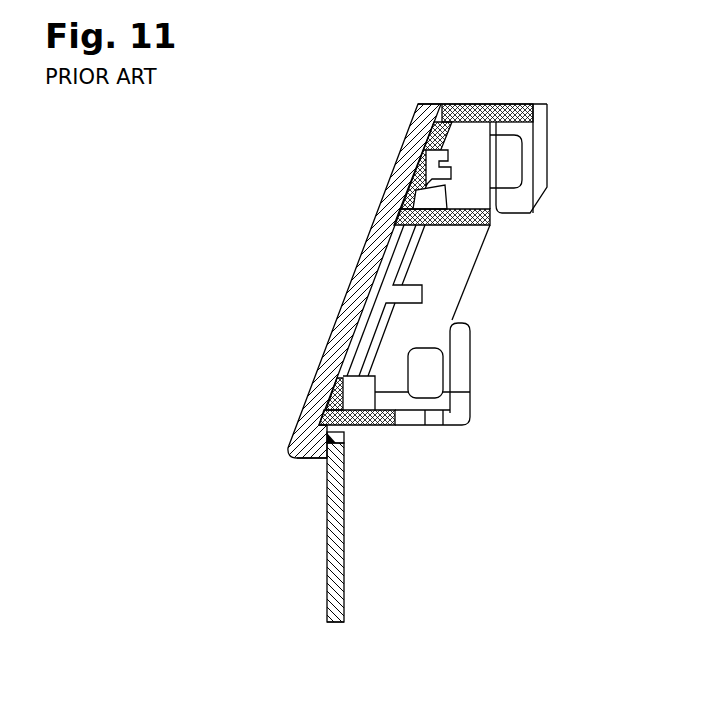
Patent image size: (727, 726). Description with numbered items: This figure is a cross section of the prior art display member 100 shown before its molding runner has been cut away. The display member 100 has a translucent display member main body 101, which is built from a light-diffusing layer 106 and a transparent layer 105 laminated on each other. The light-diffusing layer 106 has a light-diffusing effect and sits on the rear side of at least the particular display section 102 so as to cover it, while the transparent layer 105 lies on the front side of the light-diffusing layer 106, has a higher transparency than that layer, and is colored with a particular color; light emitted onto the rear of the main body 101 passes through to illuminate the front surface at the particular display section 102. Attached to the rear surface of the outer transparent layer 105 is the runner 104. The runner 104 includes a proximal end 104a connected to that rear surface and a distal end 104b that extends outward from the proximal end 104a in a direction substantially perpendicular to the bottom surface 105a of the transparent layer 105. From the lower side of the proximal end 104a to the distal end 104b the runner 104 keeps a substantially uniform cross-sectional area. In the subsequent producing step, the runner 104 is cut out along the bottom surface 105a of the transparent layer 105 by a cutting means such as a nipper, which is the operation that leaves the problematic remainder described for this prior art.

The display member 100 is at (550, 86).
The display member main body 101 is at (338, 250).
The particular display section 102 is at (390, 160).
The runner 104 is at (346, 594).
The proximal end 104a is at (347, 448).
The distal end 104b is at (332, 623).
The transparent layer 105 is at (317, 355).
The bottom surface 105a is at (313, 452).
The light-diffusing layer 106 is at (490, 224).